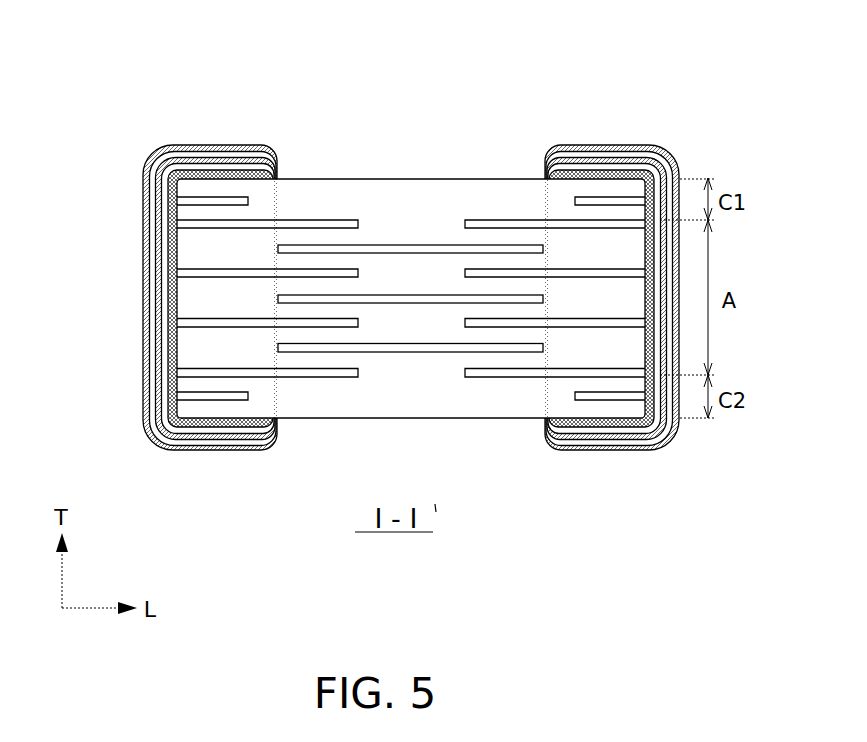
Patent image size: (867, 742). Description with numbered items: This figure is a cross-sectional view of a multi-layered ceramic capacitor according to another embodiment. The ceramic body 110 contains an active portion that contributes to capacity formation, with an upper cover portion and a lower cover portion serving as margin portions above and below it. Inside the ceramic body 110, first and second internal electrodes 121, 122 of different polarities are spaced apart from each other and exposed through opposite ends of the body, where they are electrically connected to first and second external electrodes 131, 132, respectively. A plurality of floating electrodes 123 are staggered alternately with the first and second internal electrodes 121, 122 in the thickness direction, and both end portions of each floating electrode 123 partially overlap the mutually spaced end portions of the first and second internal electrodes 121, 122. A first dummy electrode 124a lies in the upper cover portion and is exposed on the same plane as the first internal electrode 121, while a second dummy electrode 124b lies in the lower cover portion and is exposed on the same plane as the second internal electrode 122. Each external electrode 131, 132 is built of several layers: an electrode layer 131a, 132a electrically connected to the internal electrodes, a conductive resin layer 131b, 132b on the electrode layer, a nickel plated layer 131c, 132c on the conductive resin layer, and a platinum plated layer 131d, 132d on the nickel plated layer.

The ceramic body 110 is at (467, 169).
The first internal electrode 121 is at (194, 227).
The second internal electrode 122 is at (617, 228).
The floating electrode 123 is at (405, 248).
The first dummy electrode 124a is at (194, 201).
The second dummy electrode 124b is at (585, 206).
The first external electrode 131 is at (176, 236).
The electrode layer 131a is at (243, 156).
The conductive resin layer 131b is at (203, 168).
The nickel plated layer 131c is at (156, 158).
The platinum plated layer 131d is at (268, 57).
The second external electrode 132 is at (654, 236).
The electrode layer 132a is at (572, 170).
The conductive resin layer 132b is at (597, 167).
The nickel plated layer 132c is at (643, 165).
The platinum plated layer 132d is at (557, 57).